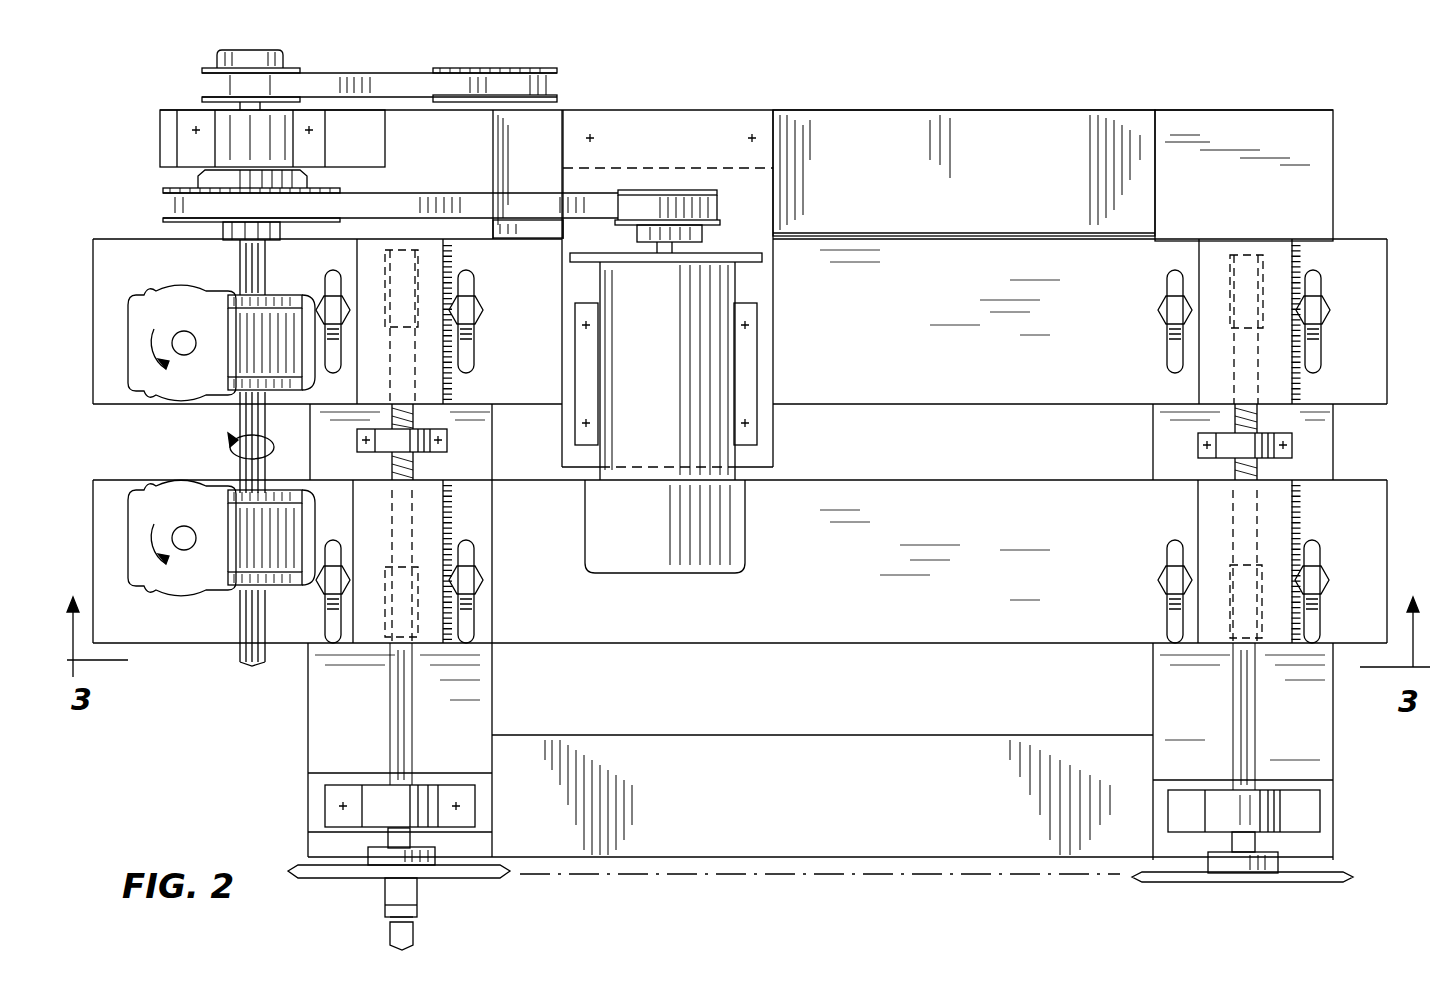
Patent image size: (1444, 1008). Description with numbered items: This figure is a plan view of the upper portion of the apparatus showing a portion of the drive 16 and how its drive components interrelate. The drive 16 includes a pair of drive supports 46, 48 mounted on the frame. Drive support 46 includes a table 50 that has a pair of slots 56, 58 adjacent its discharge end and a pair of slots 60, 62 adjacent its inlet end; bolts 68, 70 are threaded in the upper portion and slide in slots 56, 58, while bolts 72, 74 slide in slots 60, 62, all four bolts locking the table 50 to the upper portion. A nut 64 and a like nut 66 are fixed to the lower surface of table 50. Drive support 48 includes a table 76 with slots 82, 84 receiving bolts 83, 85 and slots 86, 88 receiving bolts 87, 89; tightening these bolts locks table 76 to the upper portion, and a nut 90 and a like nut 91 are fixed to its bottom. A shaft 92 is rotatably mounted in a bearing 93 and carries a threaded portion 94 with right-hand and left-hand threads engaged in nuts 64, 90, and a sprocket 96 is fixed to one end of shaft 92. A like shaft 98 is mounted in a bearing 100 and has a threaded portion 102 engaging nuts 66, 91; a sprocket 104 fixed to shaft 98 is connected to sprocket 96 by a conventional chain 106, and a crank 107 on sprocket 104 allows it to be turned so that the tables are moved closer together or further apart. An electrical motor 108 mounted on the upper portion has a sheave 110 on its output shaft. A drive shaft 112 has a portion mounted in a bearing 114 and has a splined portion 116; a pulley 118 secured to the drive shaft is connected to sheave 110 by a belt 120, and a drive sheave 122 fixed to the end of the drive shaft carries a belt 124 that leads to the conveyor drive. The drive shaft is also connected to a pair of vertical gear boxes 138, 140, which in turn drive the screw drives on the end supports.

The drive 16 is at (1252, 240).
The drive support 46 is at (878, 240).
The drive support 48 is at (903, 481).
The table 50 is at (962, 237).
The slot 56 is at (1322, 364).
The slot 58 is at (1170, 365).
The slot 60 is at (472, 280).
The slot 62 is at (345, 360).
The nut 64 is at (1243, 280).
The nut 66 is at (472, 340).
The bolt 68 is at (1320, 316).
The bolt 70 is at (1170, 313).
The bolt 72 is at (468, 310).
The bolt 74 is at (330, 312).
The table 76 is at (962, 492).
The slot 82 is at (1310, 611).
The bolt 83 is at (1315, 583).
The slot 84 is at (1172, 530).
The bolt 85 is at (1173, 582).
The slot 86 is at (470, 528).
The bolt 87 is at (470, 580).
The slot 88 is at (340, 614).
The bolt 89 is at (330, 578).
The nut 90 is at (1237, 630).
The nut 91 is at (420, 636).
The shaft 92 is at (1245, 746).
The bearing 93 is at (1270, 812).
The threaded portion 94 is at (1300, 437).
The sprocket 96 is at (1290, 880).
The shaft 98 is at (430, 512).
The bearing 100 is at (420, 812).
The threaded portion 102 is at (372, 428).
The sprocket 104 is at (330, 870).
The chain 106 is at (750, 876).
The crank 107 is at (405, 938).
The electrical motor 108 is at (690, 355).
The sheave 110 is at (690, 190).
The drive shaft 112 is at (250, 254).
The bearing 114 is at (268, 135).
The splined portion 116 is at (228, 425).
The pulley 118 is at (178, 194).
The belt 120 is at (505, 210).
The drive sheave 122 is at (268, 70).
The belt 124 is at (345, 85).
The vertical gear box 138 is at (178, 578).
The vertical gear box 140 is at (178, 392).